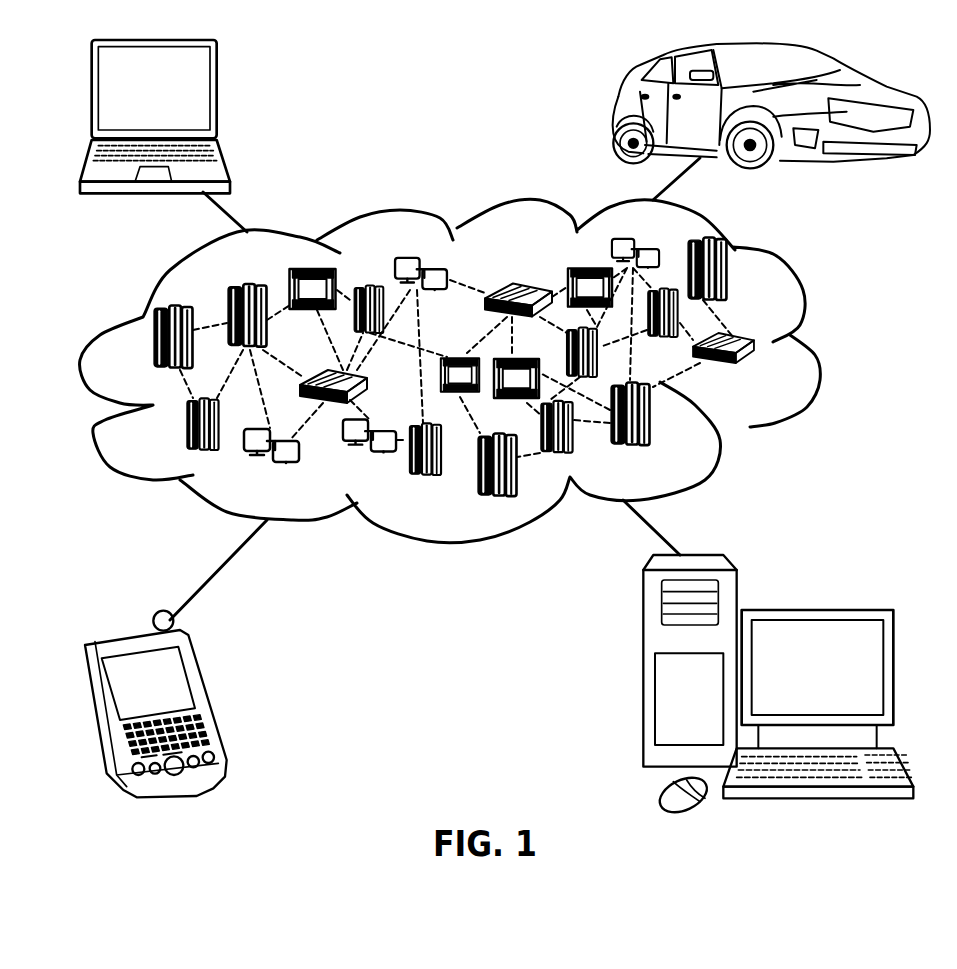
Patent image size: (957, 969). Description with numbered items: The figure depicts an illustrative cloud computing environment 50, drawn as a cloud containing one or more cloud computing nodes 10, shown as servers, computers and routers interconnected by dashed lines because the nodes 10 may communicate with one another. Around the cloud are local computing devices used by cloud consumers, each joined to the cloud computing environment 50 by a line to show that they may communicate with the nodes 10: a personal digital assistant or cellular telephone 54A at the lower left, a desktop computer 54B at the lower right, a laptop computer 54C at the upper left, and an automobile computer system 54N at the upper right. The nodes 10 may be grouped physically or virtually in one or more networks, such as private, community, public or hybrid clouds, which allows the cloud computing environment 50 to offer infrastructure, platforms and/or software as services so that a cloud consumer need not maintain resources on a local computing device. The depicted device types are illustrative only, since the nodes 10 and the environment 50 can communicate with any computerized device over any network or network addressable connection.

The cloud computing nodes 10 is at (474, 371).
The cloud computing environment 50 is at (817, 347).
The personal digital assistant (PDA) or cellular telephone 54A is at (210, 697).
The desktop computer 54B is at (813, 608).
The laptop computer 54C is at (217, 95).
The automobile computer system 54N is at (615, 112).